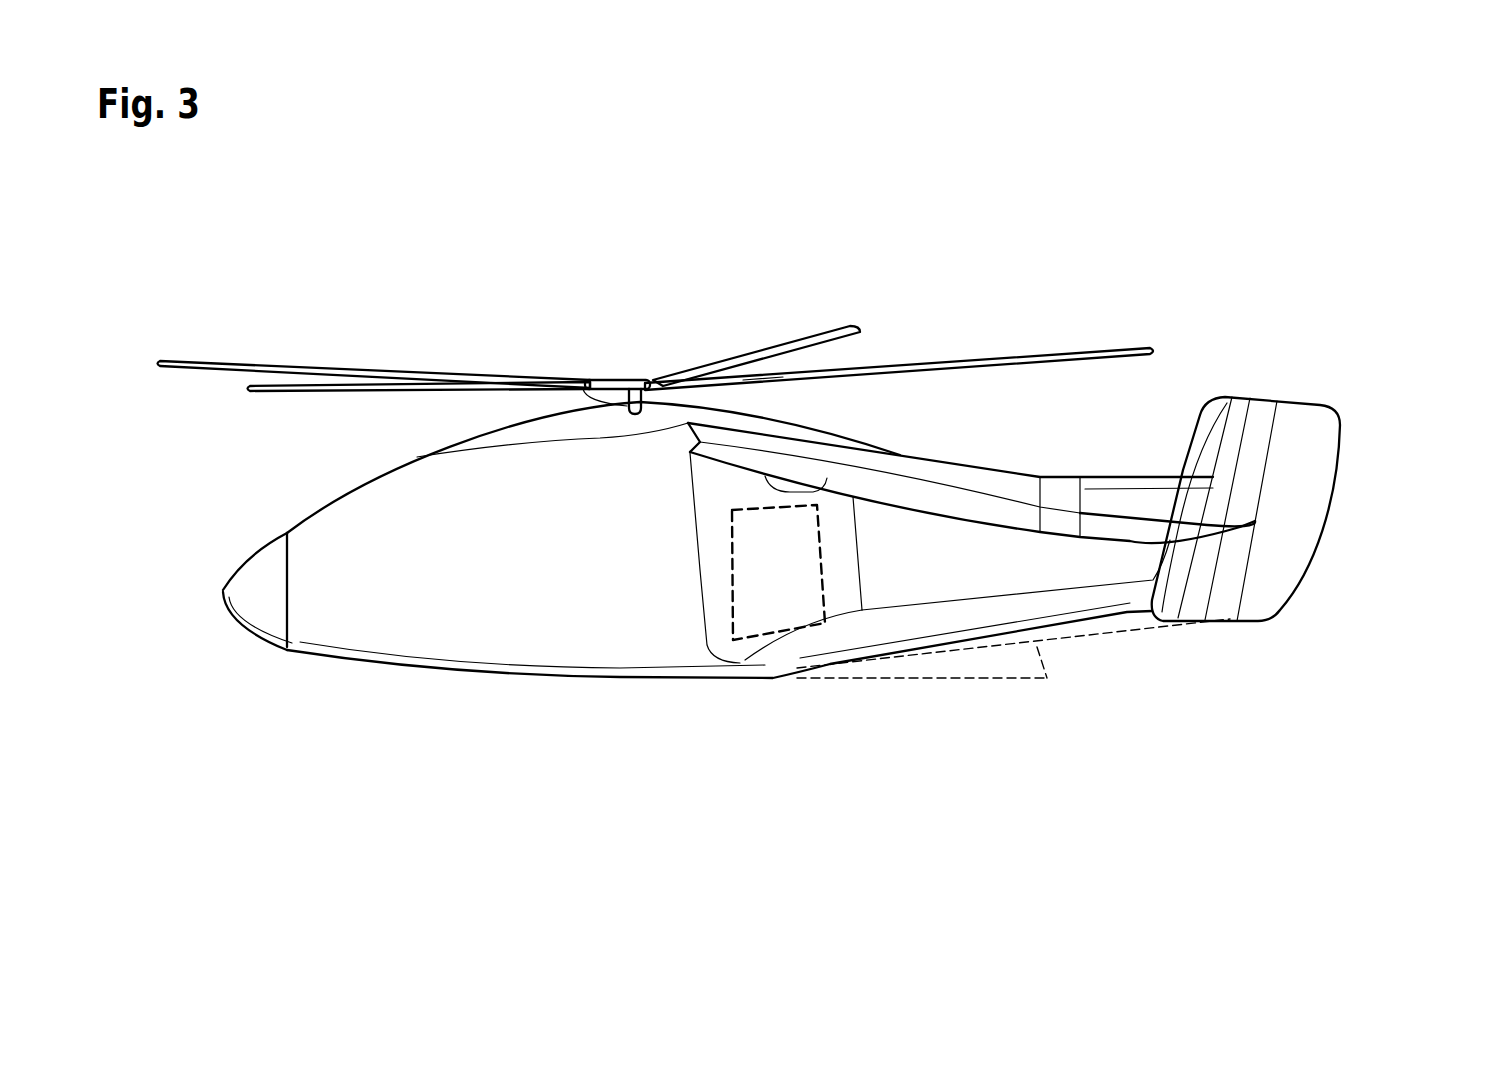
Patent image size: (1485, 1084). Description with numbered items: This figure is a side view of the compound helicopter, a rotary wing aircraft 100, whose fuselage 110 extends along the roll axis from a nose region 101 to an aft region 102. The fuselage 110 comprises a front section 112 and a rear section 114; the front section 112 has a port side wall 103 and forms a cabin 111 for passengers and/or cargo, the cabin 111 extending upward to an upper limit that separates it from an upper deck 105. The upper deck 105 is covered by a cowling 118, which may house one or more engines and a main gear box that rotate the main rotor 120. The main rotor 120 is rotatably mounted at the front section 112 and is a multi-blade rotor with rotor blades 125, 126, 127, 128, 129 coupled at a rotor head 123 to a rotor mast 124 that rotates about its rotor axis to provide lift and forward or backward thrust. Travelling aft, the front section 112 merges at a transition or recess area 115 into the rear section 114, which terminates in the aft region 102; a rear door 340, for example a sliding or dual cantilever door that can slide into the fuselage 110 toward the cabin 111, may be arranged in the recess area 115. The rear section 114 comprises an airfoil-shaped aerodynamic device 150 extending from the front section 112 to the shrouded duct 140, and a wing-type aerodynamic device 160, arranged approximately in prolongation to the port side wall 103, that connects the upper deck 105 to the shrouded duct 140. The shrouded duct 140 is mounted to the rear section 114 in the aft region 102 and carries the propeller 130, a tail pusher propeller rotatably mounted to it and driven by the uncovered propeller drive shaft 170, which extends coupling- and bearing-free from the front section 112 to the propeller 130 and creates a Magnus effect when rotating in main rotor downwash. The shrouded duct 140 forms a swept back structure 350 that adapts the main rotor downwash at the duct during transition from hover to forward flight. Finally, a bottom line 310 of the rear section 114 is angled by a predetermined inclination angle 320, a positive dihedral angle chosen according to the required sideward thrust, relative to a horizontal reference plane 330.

The rotary wing aircraft 100 is at (223, 241).
The nose region 101 is at (219, 599).
The aft region 102 is at (1322, 533).
The port side wall 103 is at (543, 586).
The upper deck 105 is at (500, 443).
The fuselage 110 is at (397, 620).
The cabin 111 is at (356, 486).
The front section 112 is at (512, 681).
The rear section 114 is at (988, 663).
The recess area 115 is at (773, 650).
The cowling 118 is at (670, 423).
The main rotor 120 is at (343, 363).
The rotor head 123 is at (617, 383).
The rotor mast 124 is at (581, 383).
The rotor blade 125 is at (176, 356).
The rotor blade 126 is at (280, 390).
The rotor blade 127 is at (745, 380).
The rotor blade 128 is at (1113, 350).
The rotor blade 129 is at (789, 345).
The propeller 130 is at (1214, 454).
The shrouded duct 140 is at (1301, 430).
The airfoil-shaped aerodynamic device 150 is at (1107, 587).
The wing-type aerodynamic device 160 is at (1107, 503).
The uncovered propeller drive shaft 170 is at (828, 488).
The bottom line 310 is at (1150, 633).
The predetermined inclination angle 320 is at (1037, 647).
The horizontal reference plane 330 is at (903, 680).
The rear door 340 is at (733, 567).
The swept back structure 350 is at (1339, 406).